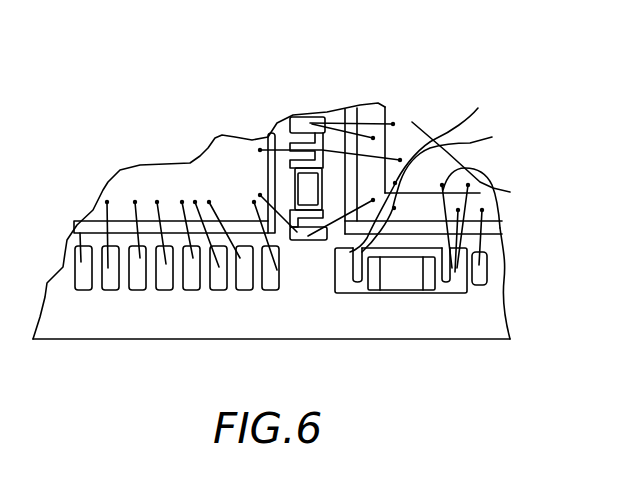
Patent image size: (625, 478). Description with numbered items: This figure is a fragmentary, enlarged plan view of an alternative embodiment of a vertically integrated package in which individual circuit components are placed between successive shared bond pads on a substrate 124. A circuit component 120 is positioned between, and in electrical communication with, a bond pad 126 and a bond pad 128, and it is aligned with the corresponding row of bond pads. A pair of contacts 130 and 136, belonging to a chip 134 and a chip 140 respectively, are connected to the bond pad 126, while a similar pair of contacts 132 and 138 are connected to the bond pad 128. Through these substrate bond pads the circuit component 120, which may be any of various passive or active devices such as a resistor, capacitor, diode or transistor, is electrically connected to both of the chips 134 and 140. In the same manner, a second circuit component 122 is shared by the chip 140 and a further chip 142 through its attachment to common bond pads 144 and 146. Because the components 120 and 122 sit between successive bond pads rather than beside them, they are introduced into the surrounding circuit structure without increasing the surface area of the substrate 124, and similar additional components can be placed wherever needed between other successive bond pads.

The circuit component 120 is at (397, 282).
The circuit component 122 is at (303, 189).
The substrate 124 is at (127, 318).
The bond pad 126 is at (345, 287).
The bond pad 128 is at (455, 288).
The contact 130 is at (426, 168).
The contact 132 is at (470, 167).
The chip 134 is at (412, 122).
The contact 136 is at (450, 185).
The contact 138 is at (510, 192).
The chip 140 is at (367, 113).
The chip 142 is at (151, 173).
The bond pad 144 is at (297, 152).
The bond pad 146 is at (305, 236).